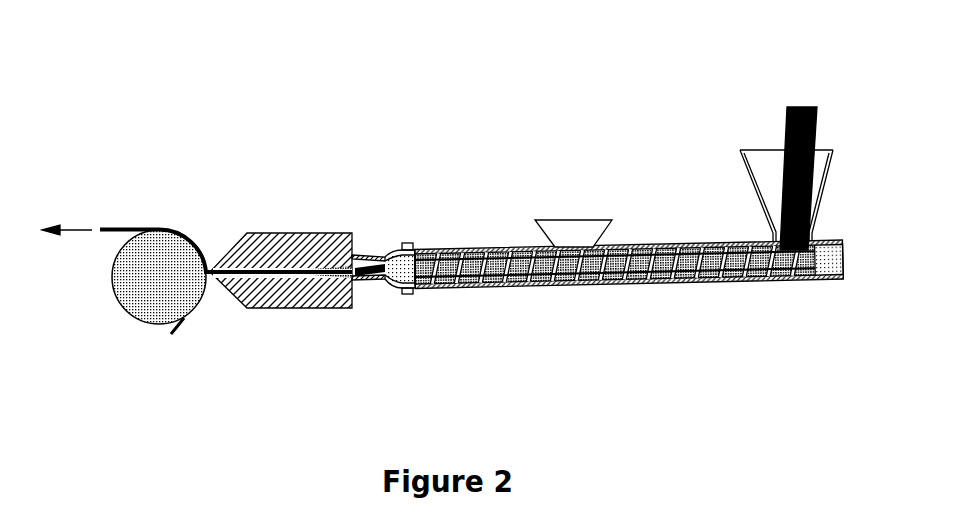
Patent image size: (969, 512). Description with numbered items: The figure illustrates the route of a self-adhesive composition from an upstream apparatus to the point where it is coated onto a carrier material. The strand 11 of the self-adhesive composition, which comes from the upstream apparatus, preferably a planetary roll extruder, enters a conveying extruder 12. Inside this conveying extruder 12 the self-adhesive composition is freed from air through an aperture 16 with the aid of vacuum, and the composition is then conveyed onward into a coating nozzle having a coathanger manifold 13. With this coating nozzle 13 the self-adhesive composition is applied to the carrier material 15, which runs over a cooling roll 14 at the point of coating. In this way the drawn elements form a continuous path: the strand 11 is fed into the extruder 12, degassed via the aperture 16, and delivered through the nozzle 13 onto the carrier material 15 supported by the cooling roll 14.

The strand 11 is at (792, 105).
The conveying extruder 12 is at (542, 283).
The coating nozzle having a coathanger manifold 13 is at (273, 293).
The cooling roll 14 is at (163, 267).
The carrier material 15 is at (171, 334).
The aperture 16 is at (575, 237).